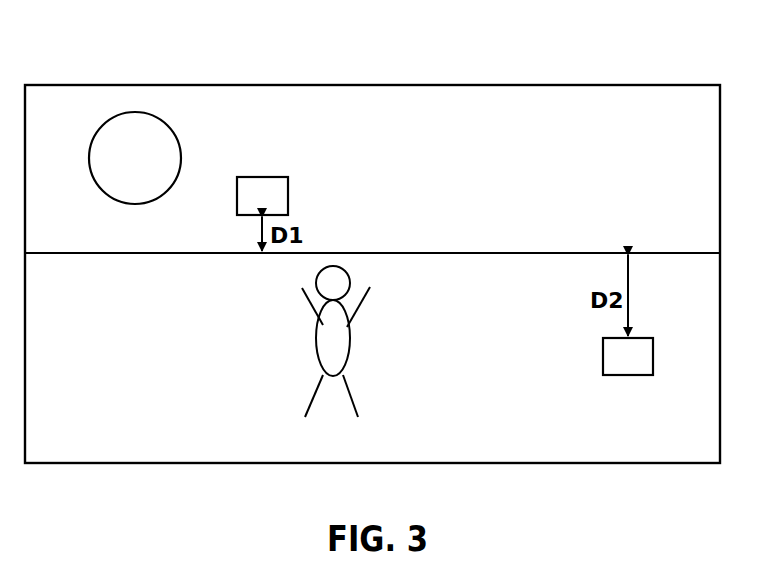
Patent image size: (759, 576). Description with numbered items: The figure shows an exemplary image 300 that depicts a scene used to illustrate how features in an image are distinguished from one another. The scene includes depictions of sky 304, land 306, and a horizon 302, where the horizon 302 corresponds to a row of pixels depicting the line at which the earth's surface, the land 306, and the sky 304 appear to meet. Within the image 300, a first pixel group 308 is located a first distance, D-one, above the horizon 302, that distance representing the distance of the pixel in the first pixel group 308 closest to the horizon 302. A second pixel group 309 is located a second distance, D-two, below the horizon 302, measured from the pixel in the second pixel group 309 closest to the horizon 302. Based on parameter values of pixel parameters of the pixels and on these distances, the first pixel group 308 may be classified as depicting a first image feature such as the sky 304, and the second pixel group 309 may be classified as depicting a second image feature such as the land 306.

The image 300 is at (582, 59).
The horizon 302 is at (488, 253).
The sky 304 is at (493, 149).
The land 306 is at (195, 303).
The first pixel group 308 is at (288, 192).
The second pixel group 309 is at (603, 368).